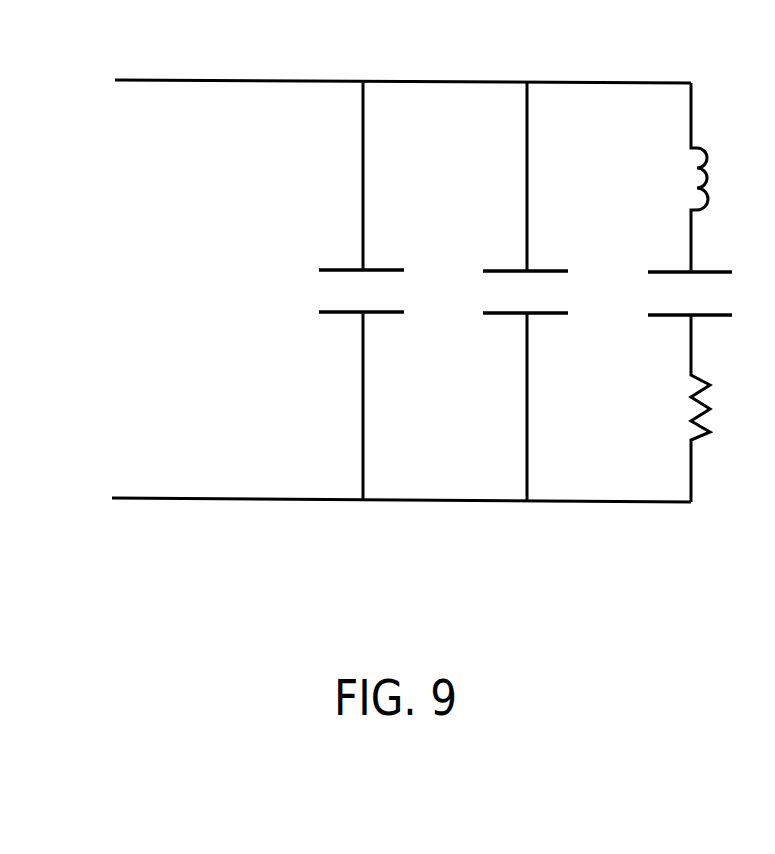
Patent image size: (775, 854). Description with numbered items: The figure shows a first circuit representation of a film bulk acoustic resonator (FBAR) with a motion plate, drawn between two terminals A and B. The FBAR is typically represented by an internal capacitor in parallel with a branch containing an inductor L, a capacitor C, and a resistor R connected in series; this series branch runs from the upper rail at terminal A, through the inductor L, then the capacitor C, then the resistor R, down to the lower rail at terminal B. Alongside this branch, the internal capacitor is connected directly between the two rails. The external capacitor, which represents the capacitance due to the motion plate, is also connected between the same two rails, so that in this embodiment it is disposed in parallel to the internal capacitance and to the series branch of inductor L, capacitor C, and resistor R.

The terminal A is at (388, 81).
The terminal B is at (387, 498).
The inductor L is at (680, 177).
The capacitor C is at (690, 275).
The resistor R is at (680, 408).